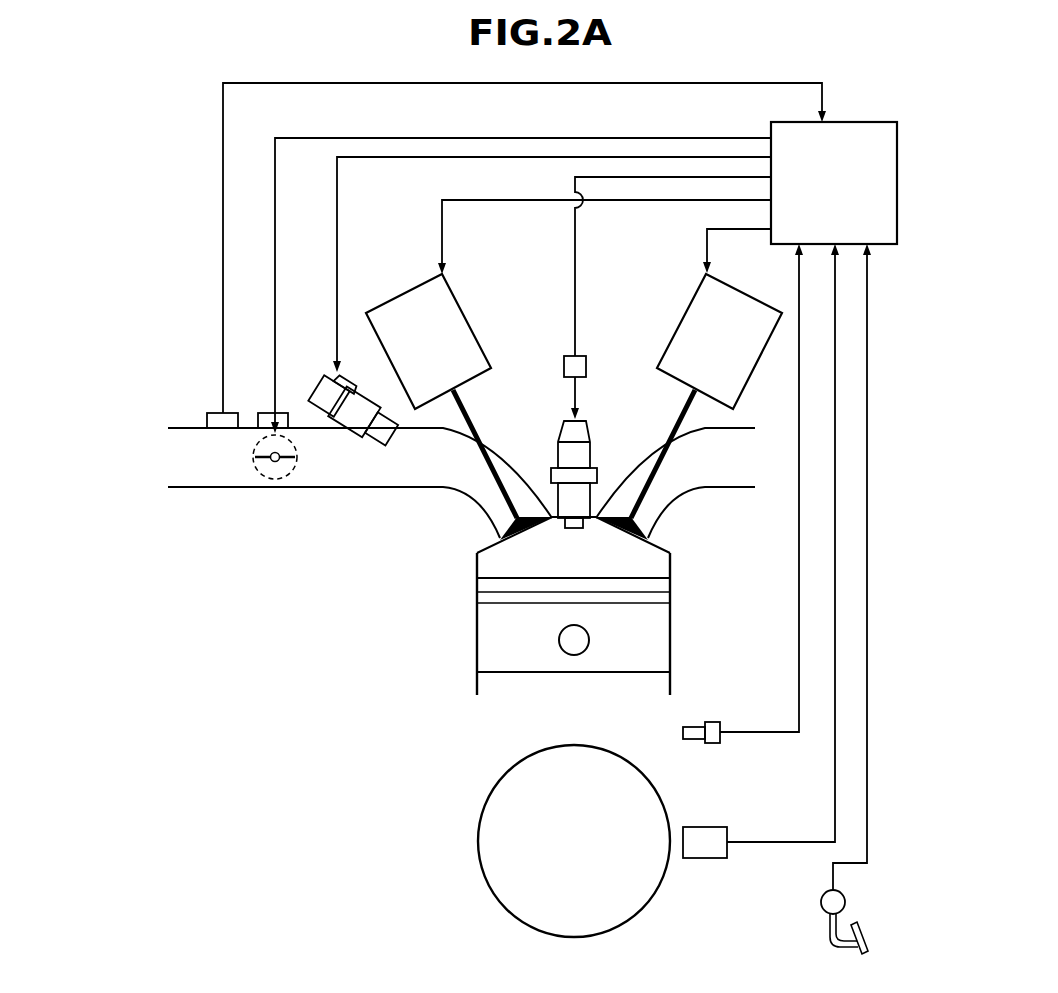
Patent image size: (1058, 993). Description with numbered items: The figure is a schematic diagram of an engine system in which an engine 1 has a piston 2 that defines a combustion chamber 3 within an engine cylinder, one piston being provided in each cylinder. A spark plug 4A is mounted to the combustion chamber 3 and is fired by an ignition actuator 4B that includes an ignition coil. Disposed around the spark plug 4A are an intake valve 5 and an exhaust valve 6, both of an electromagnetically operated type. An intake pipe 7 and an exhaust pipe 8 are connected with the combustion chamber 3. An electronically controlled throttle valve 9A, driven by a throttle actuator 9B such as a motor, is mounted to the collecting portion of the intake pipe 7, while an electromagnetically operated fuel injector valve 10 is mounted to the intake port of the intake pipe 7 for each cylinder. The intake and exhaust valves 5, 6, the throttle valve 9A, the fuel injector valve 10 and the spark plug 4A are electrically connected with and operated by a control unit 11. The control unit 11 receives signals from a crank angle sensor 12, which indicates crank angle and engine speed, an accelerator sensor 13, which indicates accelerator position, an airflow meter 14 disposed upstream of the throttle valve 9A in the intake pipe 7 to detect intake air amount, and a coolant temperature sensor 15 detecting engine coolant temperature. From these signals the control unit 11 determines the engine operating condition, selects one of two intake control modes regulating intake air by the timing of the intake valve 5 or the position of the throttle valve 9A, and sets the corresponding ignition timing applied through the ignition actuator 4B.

The engine 1 is at (440, 606).
The piston 2 is at (647, 627).
The combustion chamber 3 is at (658, 567).
The spark plug 4A is at (592, 450).
The ignition actuator 4B is at (590, 358).
The intake valve 5 is at (478, 309).
The exhaust valve 6 is at (661, 298).
The intake pipe 7 is at (358, 489).
The exhaust pipe 8 is at (723, 473).
The throttle valve 9A is at (268, 464).
The throttle actuator 9B is at (265, 413).
The fuel injector valve 10 is at (320, 392).
The control unit 11 is at (866, 120).
The crank angle sensor 12 is at (703, 827).
The accelerator sensor 13 is at (821, 901).
The airflow meter 14 is at (213, 413).
The coolant temperature sensor 15 is at (707, 722).